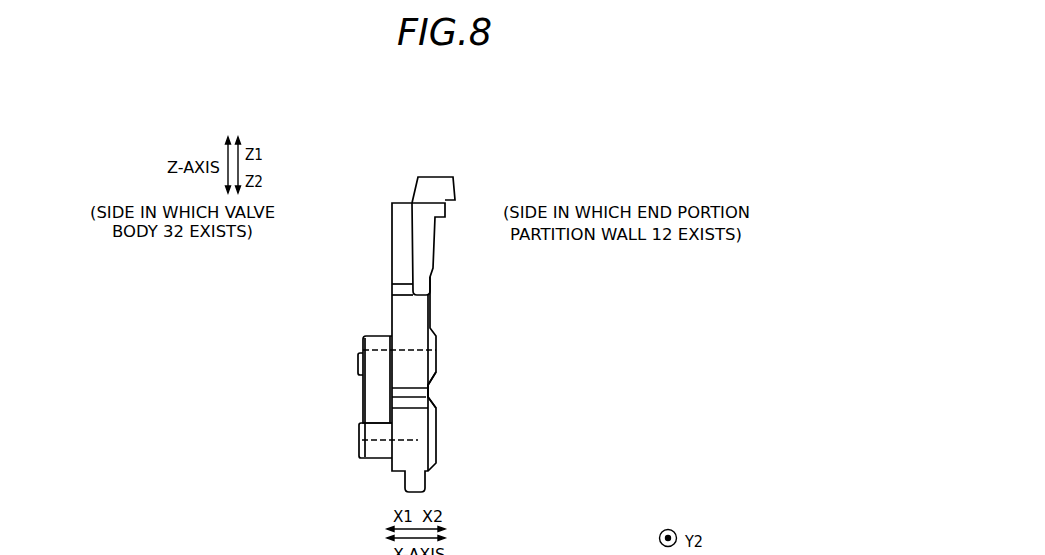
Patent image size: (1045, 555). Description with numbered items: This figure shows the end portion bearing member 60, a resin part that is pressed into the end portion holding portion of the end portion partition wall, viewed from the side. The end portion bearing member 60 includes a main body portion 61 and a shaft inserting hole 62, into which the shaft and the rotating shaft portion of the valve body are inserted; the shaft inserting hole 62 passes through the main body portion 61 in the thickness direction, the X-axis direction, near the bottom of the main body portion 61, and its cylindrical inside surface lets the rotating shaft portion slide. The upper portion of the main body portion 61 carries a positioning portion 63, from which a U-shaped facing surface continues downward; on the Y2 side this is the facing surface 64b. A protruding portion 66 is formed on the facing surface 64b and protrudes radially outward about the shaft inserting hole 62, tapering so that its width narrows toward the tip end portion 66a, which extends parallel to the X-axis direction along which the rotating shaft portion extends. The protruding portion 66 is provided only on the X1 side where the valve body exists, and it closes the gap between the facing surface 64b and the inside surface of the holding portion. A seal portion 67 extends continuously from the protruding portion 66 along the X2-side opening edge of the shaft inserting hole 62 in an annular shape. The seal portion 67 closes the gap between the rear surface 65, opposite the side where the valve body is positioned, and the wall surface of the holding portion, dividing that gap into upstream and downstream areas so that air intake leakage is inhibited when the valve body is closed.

The end portion bearing member 60 is at (572, 147).
The main body portion 61 is at (402, 207).
The shaft inserting hole 62 is at (418, 440).
The positioning portion 63 is at (407, 300).
The facing surface of the other side 64b is at (413, 328).
The rear surface 65 is at (430, 284).
The protruding portion 66 is at (420, 400).
The tip end portion 66a is at (436, 391).
The seal portion 67 is at (437, 358).